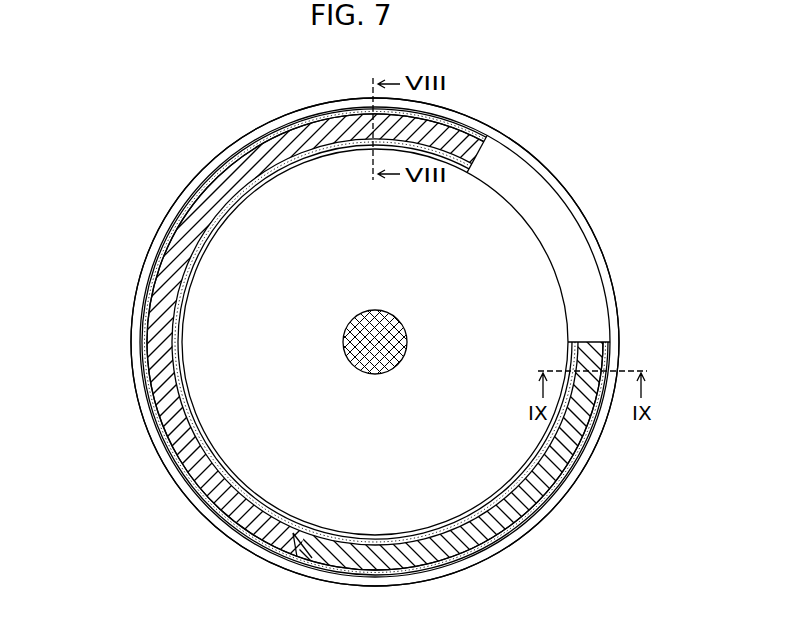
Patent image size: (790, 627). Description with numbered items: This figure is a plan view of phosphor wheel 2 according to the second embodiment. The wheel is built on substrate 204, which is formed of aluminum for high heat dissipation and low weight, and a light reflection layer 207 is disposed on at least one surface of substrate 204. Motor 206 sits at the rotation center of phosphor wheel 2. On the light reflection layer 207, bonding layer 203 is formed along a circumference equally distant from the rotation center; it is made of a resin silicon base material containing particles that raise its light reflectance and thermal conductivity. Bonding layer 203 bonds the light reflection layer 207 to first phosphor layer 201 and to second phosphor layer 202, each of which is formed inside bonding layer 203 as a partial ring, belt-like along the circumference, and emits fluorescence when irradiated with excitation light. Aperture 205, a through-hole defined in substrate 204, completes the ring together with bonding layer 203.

The phosphor wheel 2 is at (613, 151).
The first phosphor layer 201 is at (173, 260).
The second phosphor layer 202 is at (332, 560).
The bonding layer 203 is at (575, 458).
The substrate 204 is at (505, 552).
The aperture 205 is at (558, 225).
The motor 206 is at (357, 318).
The light reflection layer 207 is at (427, 577).